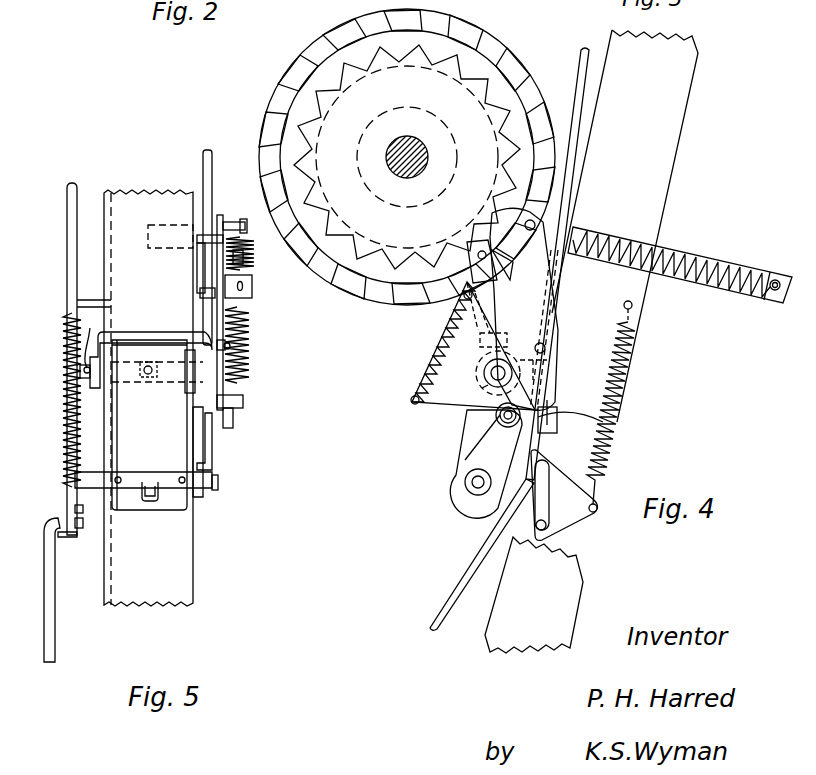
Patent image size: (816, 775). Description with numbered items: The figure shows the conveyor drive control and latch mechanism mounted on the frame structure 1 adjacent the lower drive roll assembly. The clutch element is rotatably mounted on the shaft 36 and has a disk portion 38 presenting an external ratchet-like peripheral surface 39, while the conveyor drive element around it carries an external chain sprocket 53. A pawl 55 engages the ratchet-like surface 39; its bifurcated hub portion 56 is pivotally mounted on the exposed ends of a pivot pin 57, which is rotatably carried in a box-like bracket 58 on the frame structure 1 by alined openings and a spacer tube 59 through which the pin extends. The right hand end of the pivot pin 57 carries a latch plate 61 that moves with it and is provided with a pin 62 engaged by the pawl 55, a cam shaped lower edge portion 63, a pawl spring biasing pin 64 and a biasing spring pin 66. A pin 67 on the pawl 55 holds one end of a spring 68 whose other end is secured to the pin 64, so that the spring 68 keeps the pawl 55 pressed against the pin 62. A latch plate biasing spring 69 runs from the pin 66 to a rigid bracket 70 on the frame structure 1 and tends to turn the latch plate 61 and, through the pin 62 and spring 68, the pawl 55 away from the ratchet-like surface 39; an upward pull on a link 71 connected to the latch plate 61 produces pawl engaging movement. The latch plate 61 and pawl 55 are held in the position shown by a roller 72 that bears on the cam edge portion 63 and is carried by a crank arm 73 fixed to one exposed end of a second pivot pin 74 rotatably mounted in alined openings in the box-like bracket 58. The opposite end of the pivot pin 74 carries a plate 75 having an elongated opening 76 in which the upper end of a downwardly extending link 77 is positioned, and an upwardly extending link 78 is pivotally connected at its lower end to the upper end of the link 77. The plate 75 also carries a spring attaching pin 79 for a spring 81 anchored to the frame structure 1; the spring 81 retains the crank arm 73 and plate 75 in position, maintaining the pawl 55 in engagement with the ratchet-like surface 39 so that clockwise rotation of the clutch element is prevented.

In FIG. 5, the frame structure 1 is at (140, 192).
In FIG. 4, the frame structure 1 is at (696, 112).
In FIG. 4, the shaft 36 is at (410, 136).
In FIG. 4, the disk portion 38 is at (468, 117).
In FIG. 4, the ratchet-like peripheral surface 39 is at (430, 60).
In FIG. 4, the external chain sprocket 53 is at (330, 42).
In FIG. 5, the pawl 55 is at (205, 258).
In FIG. 4, the pawl 55 is at (473, 258).
In FIG. 5, the bifurcated hub portion 56 is at (200, 390).
In FIG. 4, the bifurcated hub portion 56 is at (482, 388).
In FIG. 5, the pivot pin 57 is at (250, 386).
In FIG. 4, the pivot pin 57 is at (482, 372).
In FIG. 5, the box-like bracket 58 is at (193, 436).
In FIG. 4, the box-like bracket 58 is at (458, 460).
In FIG. 5, the spacer tube 59 is at (160, 385).
In FIG. 5, the latch plate 61 is at (223, 298).
In FIG. 4, the latch plate 61 is at (531, 298).
In FIG. 5, the pin 62 is at (200, 294).
In FIG. 4, the pin 62 is at (472, 296).
In FIG. 4, the cam shaped lower edge portion 63 is at (566, 396).
In FIG. 4, the pawl spring biasing pin 64 is at (411, 404).
In FIG. 5, the biasing spring pin 66 is at (232, 222).
In FIG. 4, the biasing spring pin 66 is at (530, 231).
In FIG. 5, the pin 67 is at (247, 253).
In FIG. 4, the pin 67 is at (482, 251).
In FIG. 4, the spring 68 is at (428, 356).
In FIG. 4, the latch plate biasing spring 69 is at (606, 235).
In FIG. 5, the rigid bracket 70 is at (252, 294).
In FIG. 4, the rigid bracket 70 is at (762, 294).
In FIG. 4, the link 71 is at (578, 72).
In FIG. 5, the roller 72 is at (230, 424).
In FIG. 4, the roller 72 is at (496, 416).
In FIG. 5, the crank arm 73 is at (212, 462).
In FIG. 4, the crank arm 73 is at (480, 445).
In FIG. 5, the pivot pin 74 is at (137, 478).
In FIG. 4, the pivot pin 74 is at (472, 488).
In FIG. 5, the plate 75 is at (70, 537).
In FIG. 4, the plate 75 is at (564, 530).
In FIG. 4, the elongated opening 76 is at (545, 468).
In FIG. 5, the link 77 is at (50, 602).
In FIG. 4, the link 77 is at (470, 588).
In FIG. 5, the link 78 is at (67, 248).
In FIG. 4, the link 78 is at (557, 420).
In FIG. 5, the spring attaching pin 79 is at (75, 507).
In FIG. 4, the spring attaching pin 79 is at (589, 506).
In FIG. 5, the spring 81 is at (64, 356).
In FIG. 4, the spring 81 is at (612, 440).